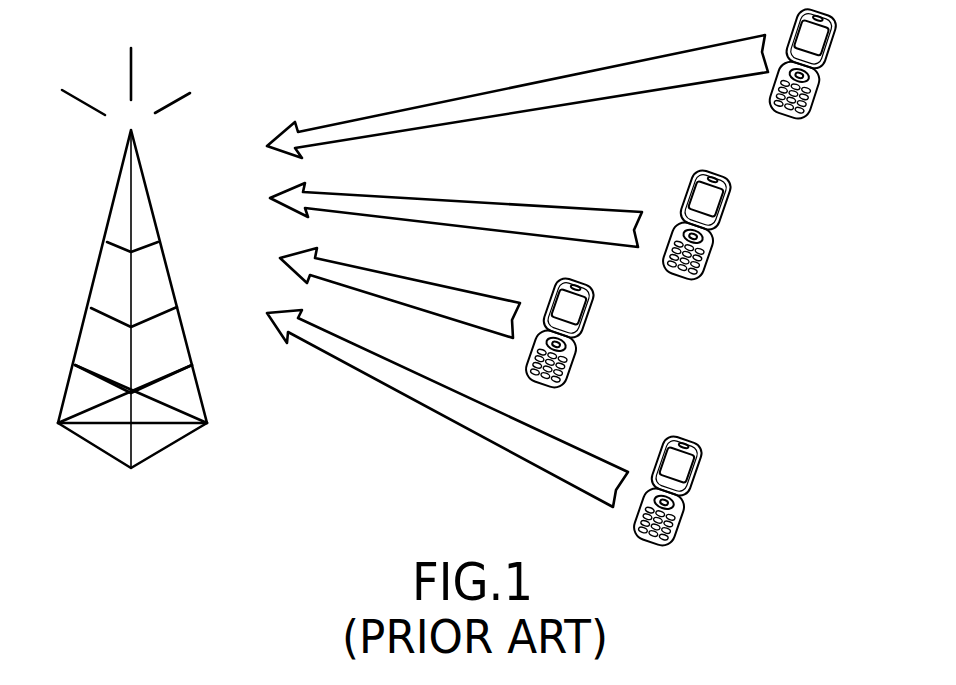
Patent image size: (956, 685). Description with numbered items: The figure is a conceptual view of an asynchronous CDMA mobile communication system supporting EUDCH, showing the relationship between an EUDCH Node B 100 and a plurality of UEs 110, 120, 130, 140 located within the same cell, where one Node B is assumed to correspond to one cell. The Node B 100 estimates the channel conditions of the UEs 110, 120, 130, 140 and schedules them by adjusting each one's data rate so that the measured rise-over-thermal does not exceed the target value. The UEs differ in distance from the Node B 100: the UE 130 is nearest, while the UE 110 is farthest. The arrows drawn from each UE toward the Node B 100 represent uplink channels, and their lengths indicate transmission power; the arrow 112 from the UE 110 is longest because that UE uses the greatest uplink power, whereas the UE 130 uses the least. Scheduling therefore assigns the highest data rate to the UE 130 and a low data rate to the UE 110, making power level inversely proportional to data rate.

The Node B 100 is at (174, 272).
The arrow 112 is at (500, 90).
The UE 110 is at (838, 48).
The UE 120 is at (733, 208).
The UE 130 is at (597, 322).
The UE 140 is at (703, 477).